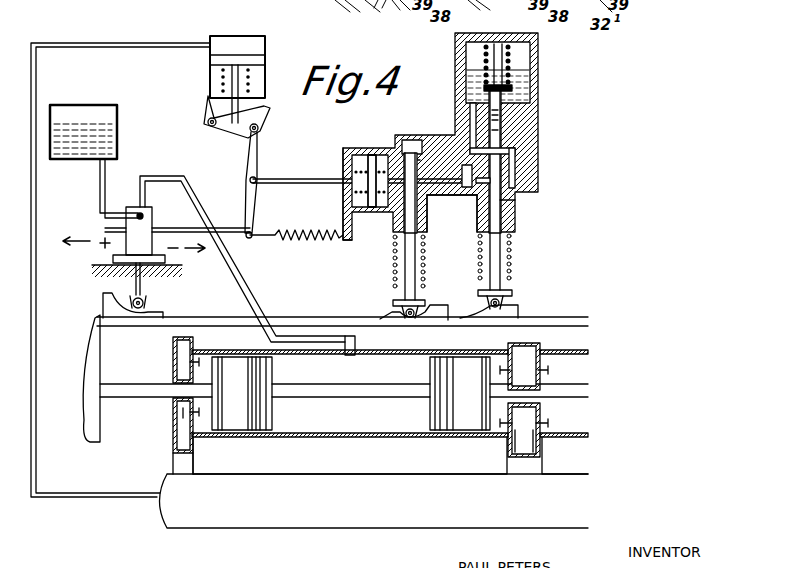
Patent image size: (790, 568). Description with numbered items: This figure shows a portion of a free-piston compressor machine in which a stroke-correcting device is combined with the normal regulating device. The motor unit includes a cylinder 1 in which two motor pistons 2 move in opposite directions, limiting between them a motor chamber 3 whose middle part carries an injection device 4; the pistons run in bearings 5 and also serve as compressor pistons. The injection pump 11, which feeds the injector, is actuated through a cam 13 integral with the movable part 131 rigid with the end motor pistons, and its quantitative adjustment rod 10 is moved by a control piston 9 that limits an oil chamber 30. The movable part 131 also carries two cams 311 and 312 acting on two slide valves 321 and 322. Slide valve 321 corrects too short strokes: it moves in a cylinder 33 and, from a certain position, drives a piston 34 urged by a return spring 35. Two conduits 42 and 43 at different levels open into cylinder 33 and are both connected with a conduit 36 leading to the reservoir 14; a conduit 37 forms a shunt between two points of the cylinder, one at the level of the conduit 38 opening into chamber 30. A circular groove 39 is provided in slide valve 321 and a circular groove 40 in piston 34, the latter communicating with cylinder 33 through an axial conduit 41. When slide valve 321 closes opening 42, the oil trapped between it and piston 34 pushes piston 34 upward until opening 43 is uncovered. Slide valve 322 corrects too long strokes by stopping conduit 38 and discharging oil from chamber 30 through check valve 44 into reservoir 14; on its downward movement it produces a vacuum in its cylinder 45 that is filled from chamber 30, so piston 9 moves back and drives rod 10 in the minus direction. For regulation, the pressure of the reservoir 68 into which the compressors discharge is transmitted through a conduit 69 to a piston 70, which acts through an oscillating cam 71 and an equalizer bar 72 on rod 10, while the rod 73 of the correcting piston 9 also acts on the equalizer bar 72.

The cylinder 1 is at (295, 437).
The motor pistons 2 is at (238, 410).
The motor chamber 3 is at (310, 405).
The injection device 4 is at (357, 348).
The bearing sleeve 5 is at (168, 408).
The control piston 9 is at (357, 150).
The quantitative adjustment rod 10 is at (168, 222).
The injection pump 11 is at (135, 216).
The cam 13 is at (108, 300).
The movable part 131 is at (212, 322).
The reservoir 14 is at (520, 78).
The chamber 30 is at (380, 152).
The cam 311 is at (512, 312).
The cam 312 is at (392, 317).
The slide valve 321 is at (500, 275).
The slide valve 322 is at (410, 278).
The cylinder 33 is at (480, 168).
The piston 34 is at (515, 97).
The return spring 35 is at (512, 54).
The conduit 36 is at (458, 108).
The conduit 37 is at (492, 180).
The conduit 38 is at (436, 210).
The circular groove 39 is at (512, 205).
The circular groove 40 is at (505, 118).
The axial conduit 41 is at (518, 144).
The conduit 42 is at (472, 215).
The conduit 43 is at (448, 200).
The check valve 44 is at (417, 138).
The cylinder 45 is at (384, 210).
The reservoir 68 is at (183, 507).
The conduit 69 is at (55, 497).
The piston 70 is at (226, 60).
The cam 71 is at (262, 118).
The equalizer bar 72 is at (258, 154).
The rod 73 is at (300, 186).